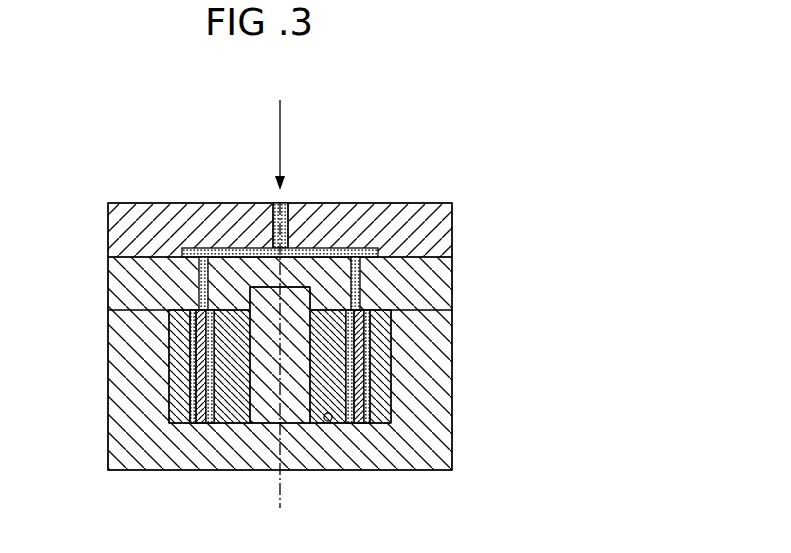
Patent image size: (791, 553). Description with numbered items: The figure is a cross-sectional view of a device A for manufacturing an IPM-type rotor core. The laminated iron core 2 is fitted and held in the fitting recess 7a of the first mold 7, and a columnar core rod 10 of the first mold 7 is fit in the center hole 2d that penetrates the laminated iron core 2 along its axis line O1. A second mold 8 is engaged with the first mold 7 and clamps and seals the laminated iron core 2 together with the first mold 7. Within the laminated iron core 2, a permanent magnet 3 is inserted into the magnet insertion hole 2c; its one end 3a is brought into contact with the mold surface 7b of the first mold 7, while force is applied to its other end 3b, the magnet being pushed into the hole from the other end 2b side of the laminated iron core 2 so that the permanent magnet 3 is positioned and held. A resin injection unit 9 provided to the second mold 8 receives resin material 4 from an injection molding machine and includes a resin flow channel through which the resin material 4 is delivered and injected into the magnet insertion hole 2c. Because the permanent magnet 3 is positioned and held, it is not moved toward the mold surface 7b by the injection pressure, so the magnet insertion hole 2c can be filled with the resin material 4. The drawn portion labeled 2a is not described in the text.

The device for manufacturing the rotor core A is at (566, 184).
The laminated iron core 2 is at (178, 422).
The piezoelectric body portion 2a is at (236, 423).
The other end of the laminated iron core 2b is at (248, 302).
The magnet insertion hole 2c is at (203, 303).
The center hole 2d is at (280, 225).
The permanent magnet 3 is at (200, 397).
The one end of the permanent magnet 3a is at (202, 423).
The other end of the permanent magnet 3b is at (192, 310).
The resin material 4 is at (178, 334).
The first mold 7 is at (460, 396).
The fitting recess 7a is at (382, 404).
The mold surface 7b is at (340, 423).
The second mold 8 is at (460, 214).
The resin injection unit 9 is at (356, 240).
The columnar core rod 10 is at (301, 287).
The axis line O1 is at (279, 371).